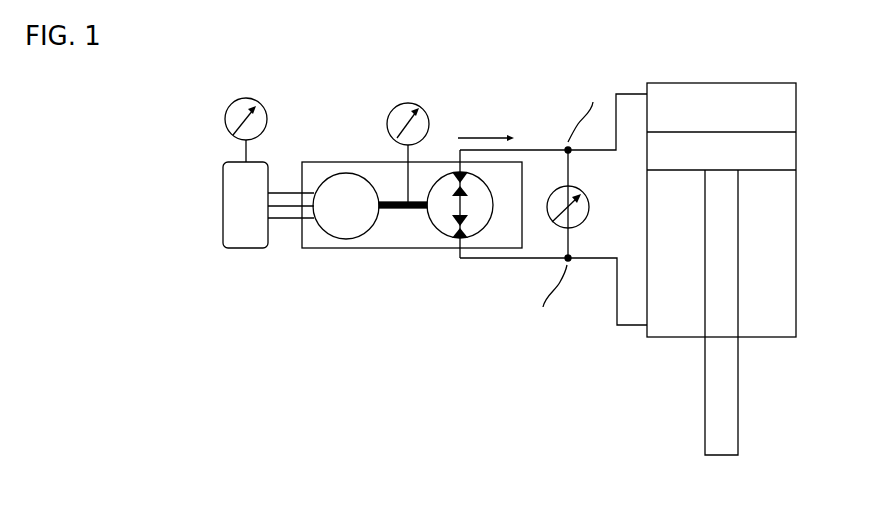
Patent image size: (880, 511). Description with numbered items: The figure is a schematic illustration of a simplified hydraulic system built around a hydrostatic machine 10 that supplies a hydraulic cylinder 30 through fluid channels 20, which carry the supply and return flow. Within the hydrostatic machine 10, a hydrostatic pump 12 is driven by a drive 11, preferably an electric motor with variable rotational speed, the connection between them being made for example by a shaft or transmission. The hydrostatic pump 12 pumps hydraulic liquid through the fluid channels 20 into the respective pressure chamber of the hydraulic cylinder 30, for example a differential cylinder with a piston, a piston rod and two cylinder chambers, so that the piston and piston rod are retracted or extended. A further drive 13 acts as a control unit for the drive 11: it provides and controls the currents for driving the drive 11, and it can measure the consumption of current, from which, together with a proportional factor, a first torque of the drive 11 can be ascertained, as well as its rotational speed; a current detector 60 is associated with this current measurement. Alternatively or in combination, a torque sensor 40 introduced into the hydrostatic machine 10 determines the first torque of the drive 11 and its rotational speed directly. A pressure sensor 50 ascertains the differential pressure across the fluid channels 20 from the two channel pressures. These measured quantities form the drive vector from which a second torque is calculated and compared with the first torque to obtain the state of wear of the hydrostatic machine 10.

The hydrostatic machine 10 is at (400, 240).
The drive 11 is at (340, 230).
The hydrostatic pump 12 is at (447, 228).
The drive 13 is at (250, 238).
The fluid transport channel 20 is at (490, 259).
The hydraulic cylinder 30 is at (670, 330).
The torque sensor 40 is at (402, 108).
The pressure sensor 50 is at (567, 218).
The current detector 60 is at (240, 102).